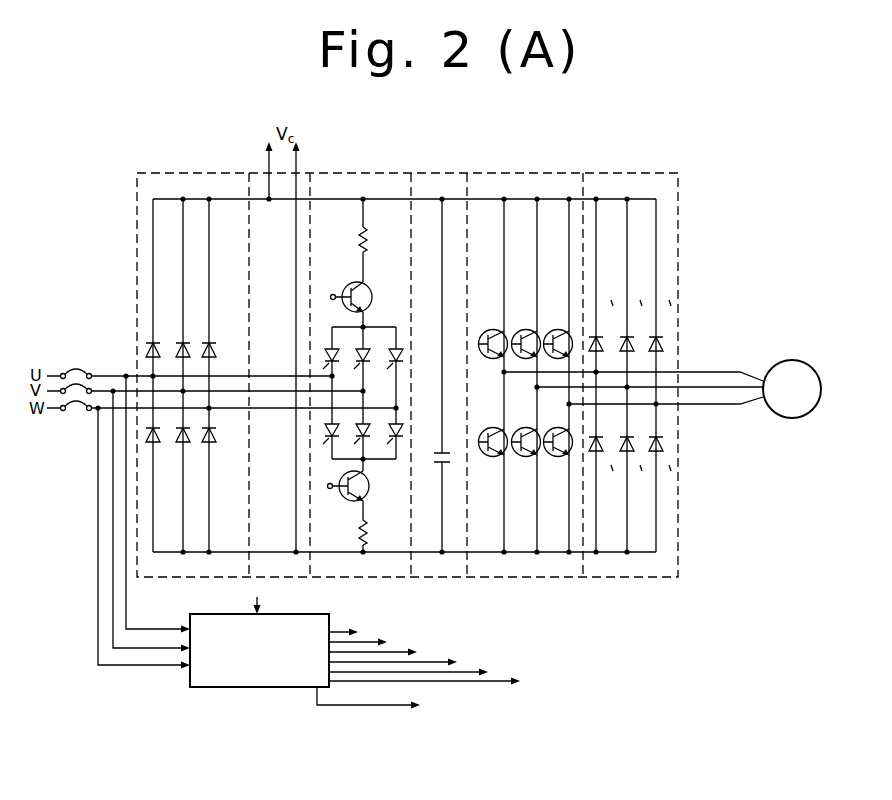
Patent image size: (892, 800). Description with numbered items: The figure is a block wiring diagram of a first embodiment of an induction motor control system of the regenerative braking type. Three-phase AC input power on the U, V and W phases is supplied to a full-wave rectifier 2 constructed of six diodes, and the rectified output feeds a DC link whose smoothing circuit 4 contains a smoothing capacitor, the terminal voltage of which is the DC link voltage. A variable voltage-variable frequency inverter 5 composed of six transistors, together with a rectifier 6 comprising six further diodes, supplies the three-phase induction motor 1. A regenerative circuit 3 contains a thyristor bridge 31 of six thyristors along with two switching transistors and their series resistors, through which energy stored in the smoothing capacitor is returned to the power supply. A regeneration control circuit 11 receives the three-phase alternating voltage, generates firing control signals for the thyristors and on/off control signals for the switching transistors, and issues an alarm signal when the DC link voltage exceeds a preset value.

The three-phase induction motor 1 is at (783, 362).
The full-wave rectifier 2 is at (172, 172).
The regenerative circuit 3 is at (363, 347).
The thyristor bridge 31 is at (373, 320).
The smoothing circuit 4 is at (454, 174).
The variable voltage-variable frequency inverter 5 is at (536, 174).
The rectifier 6 is at (626, 174).
The regeneration control circuit 11 is at (263, 688).